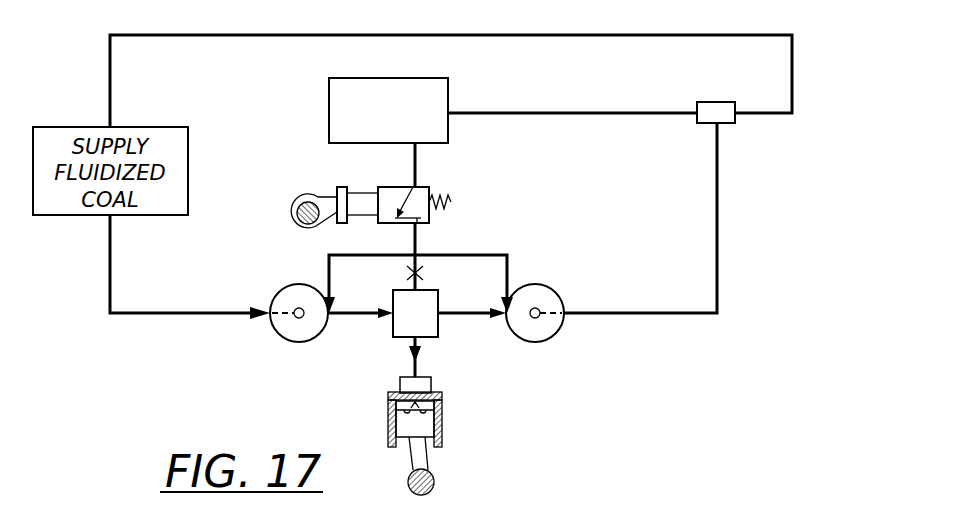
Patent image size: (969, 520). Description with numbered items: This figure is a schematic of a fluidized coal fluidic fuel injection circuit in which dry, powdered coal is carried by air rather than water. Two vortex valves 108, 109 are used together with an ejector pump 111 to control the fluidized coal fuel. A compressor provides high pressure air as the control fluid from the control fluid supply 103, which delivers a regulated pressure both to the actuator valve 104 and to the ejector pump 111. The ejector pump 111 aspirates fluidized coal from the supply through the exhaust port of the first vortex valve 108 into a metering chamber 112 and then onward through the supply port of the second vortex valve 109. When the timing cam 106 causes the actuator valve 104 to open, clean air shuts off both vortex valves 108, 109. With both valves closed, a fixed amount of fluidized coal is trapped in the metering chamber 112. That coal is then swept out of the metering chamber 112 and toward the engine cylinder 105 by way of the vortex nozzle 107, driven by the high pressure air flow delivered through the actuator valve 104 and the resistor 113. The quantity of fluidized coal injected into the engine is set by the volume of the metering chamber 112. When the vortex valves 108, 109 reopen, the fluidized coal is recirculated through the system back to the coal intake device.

The control fluid supply 103 is at (330, 106).
The actuator valve 104 is at (397, 185).
The piston and cylinder actuator 105 is at (444, 428).
The timing cam 106 is at (300, 235).
The vortex nozzle 107 is at (432, 378).
The vortex valve 108 is at (283, 337).
The vortex valve 109 is at (555, 289).
The ejector pump 111 is at (727, 124).
The metering chamber 112 is at (391, 325).
The resistor 113 is at (406, 273).